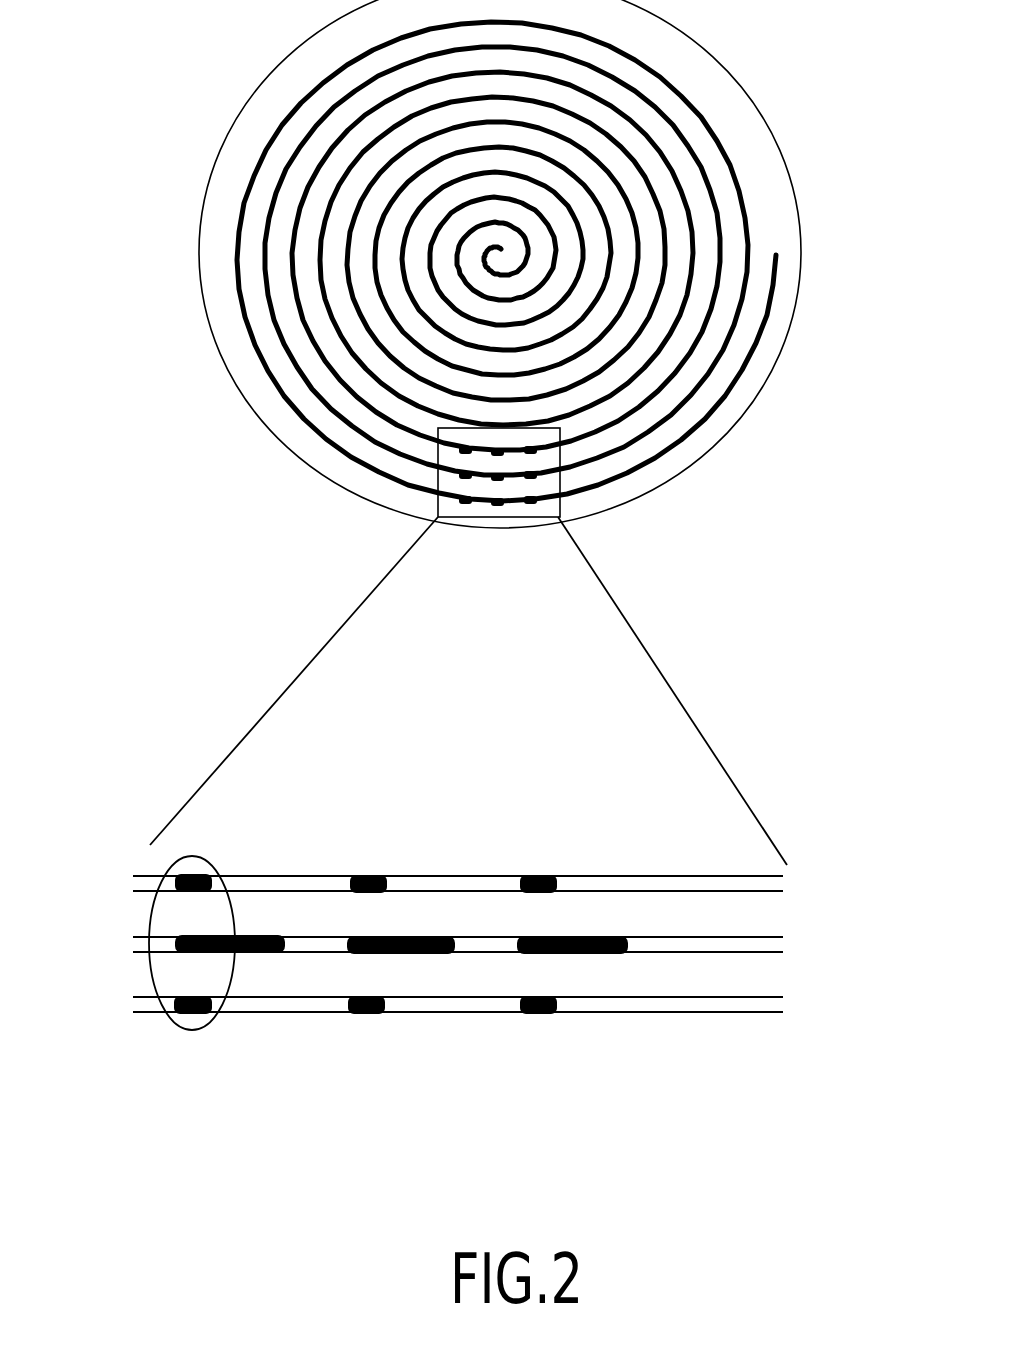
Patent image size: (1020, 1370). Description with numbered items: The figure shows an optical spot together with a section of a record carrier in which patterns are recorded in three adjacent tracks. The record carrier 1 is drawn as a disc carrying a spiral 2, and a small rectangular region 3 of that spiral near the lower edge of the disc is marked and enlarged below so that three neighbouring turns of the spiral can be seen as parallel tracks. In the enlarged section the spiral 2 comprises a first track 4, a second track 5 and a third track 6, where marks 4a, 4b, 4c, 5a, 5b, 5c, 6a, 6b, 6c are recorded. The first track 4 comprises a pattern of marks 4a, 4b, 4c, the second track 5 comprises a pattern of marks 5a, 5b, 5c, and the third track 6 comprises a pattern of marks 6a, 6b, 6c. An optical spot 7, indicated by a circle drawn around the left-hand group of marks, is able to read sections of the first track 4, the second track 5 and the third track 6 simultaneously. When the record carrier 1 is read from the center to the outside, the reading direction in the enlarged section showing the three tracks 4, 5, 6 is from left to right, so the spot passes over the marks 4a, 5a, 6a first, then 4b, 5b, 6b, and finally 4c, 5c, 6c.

The record carrier 1 is at (800, 217).
The spiral 2 is at (725, 398).
The enlarged detail region 3 is at (438, 504).
The first track 4 is at (130, 945).
The second track 5 is at (120, 1005).
The third track 6 is at (128, 885).
The mark 4a is at (242, 957).
The mark 4b is at (418, 955).
The mark 4c is at (582, 963).
The mark 5a is at (190, 1015).
The mark 5b is at (362, 1017).
The mark 5c is at (533, 1015).
The mark 6a is at (192, 877).
The mark 6b is at (367, 875).
The mark 6c is at (537, 875).
The optical spot 7 is at (170, 1017).